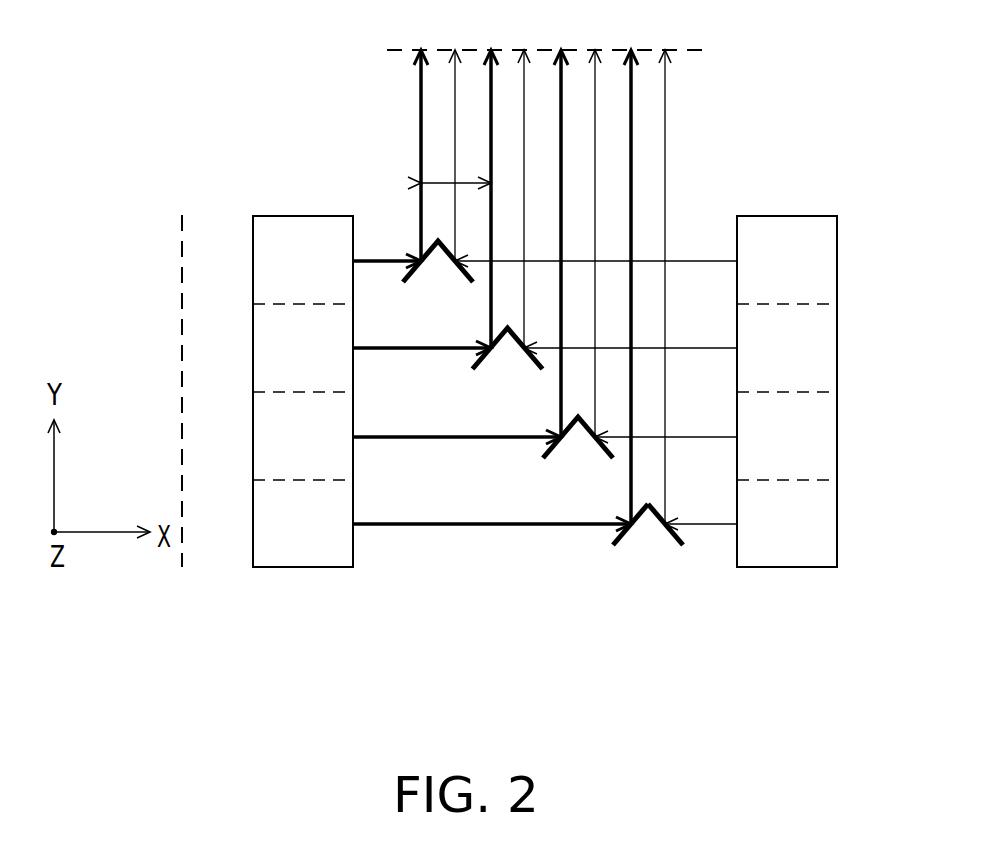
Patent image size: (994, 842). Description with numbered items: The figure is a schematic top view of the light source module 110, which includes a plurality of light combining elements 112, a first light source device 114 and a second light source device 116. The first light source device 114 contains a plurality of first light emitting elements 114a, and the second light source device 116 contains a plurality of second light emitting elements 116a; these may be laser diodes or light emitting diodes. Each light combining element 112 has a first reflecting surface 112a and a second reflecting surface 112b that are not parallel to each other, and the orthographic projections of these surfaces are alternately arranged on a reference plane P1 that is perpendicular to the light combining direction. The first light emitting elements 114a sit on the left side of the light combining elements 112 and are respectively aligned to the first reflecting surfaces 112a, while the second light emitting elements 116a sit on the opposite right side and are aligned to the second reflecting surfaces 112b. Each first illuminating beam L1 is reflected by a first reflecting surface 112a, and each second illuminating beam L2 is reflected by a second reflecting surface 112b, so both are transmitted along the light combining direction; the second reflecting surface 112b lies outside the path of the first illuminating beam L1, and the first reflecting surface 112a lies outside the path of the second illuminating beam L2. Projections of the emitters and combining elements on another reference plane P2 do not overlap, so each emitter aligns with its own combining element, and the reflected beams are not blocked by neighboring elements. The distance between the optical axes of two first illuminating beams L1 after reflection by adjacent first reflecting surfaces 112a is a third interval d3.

The light source module 110 is at (513, 377).
The light combining element 112 is at (578, 446).
The first reflecting surface 112a is at (637, 505).
The second reflecting surface 112b is at (662, 510).
The first light source device 114 is at (305, 190).
The first light emitting element 114a is at (268, 260).
The second light source device 116 is at (795, 185).
The second light emitting element 116a is at (824, 239).
The first illuminating beam L1 is at (385, 262).
The second illuminating beam L2 is at (693, 260).
The reference plane P1 is at (687, 50).
The reference plane P2 is at (182, 245).
The third interval d3 is at (456, 161).